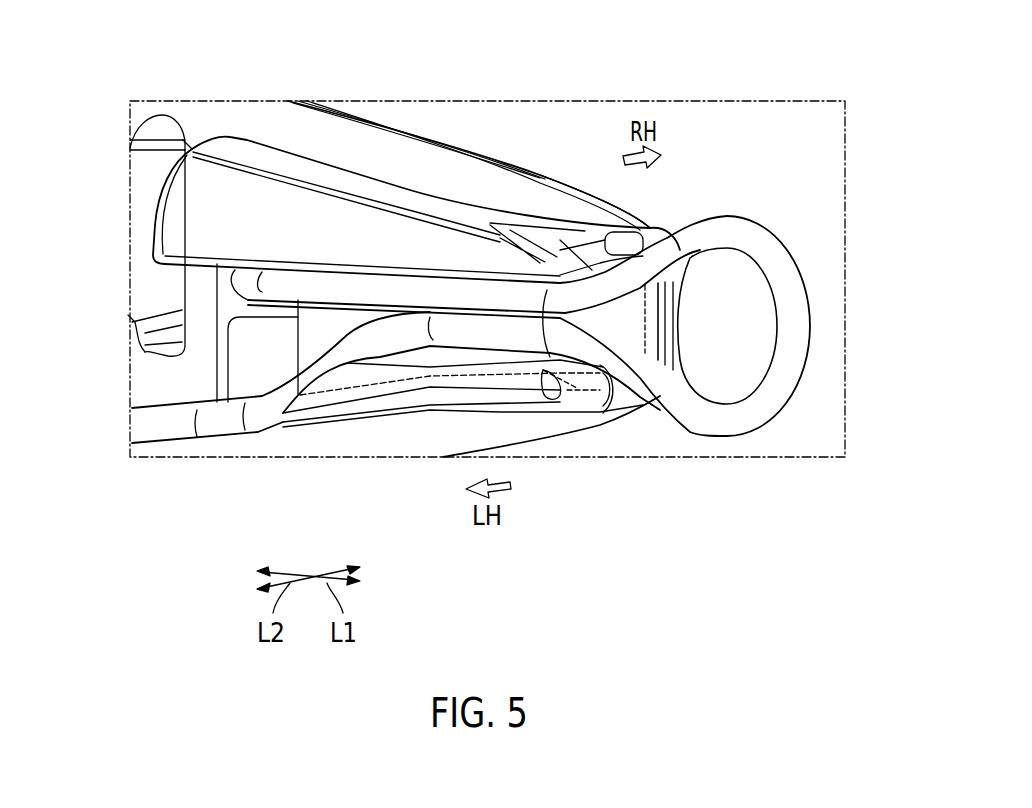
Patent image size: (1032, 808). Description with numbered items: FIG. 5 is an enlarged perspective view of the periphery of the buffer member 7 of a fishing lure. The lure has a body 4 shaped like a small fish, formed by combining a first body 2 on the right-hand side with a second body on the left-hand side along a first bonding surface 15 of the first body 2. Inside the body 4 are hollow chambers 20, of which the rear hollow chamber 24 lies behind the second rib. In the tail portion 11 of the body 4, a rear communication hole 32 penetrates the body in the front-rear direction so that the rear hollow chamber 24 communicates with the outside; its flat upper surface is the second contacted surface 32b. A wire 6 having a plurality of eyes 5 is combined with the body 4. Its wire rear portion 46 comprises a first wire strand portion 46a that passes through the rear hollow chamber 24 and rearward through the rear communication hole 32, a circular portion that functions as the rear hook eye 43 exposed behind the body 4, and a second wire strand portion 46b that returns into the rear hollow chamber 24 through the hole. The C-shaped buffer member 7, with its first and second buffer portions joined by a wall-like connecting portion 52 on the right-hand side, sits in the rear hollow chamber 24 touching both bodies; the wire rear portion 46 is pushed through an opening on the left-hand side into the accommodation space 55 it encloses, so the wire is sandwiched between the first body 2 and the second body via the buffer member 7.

The first body 2 is at (397, 124).
The body 4 is at (421, 96).
The eyes 5 is at (789, 326).
The wire 6 is at (137, 426).
The buffer member 7 is at (259, 192).
The tail portion 11 is at (592, 192).
The first bonding surface 15 is at (327, 138).
The hollow chamber 20 is at (139, 333).
The rear hollow chamber 24 is at (235, 305).
The rear communication hole 32 is at (665, 313).
The second contacted surface 32b is at (583, 242).
The rear hook eye 43 is at (797, 325).
The wire rear portion 46 is at (479, 284).
The first wire strand portion 46a is at (500, 333).
The second wire strand portion 46b is at (463, 297).
The connecting portion 52 is at (612, 327).
The accommodation space 55 is at (352, 316).